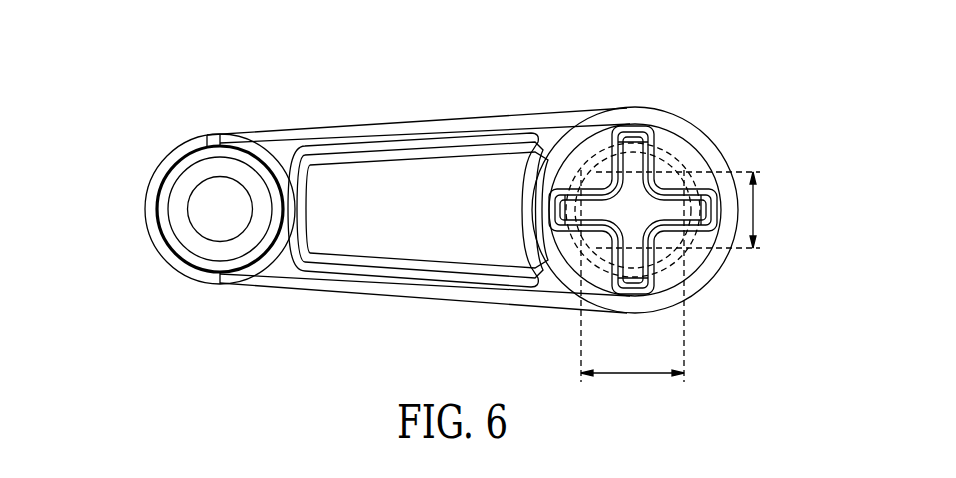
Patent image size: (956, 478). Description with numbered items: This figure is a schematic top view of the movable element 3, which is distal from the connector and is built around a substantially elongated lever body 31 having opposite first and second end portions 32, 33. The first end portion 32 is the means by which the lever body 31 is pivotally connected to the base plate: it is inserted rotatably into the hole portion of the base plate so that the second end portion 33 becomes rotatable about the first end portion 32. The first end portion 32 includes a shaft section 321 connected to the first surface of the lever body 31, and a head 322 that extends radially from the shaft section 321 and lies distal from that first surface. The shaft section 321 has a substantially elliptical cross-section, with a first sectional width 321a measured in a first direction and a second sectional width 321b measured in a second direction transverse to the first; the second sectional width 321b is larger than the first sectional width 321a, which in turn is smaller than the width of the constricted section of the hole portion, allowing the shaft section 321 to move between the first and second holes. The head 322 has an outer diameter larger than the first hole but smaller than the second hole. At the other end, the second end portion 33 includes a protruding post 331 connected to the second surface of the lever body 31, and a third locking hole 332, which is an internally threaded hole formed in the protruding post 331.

The movable element 3 is at (403, 100).
The lever body 31 is at (477, 119).
The first end portion 32 is at (672, 148).
The shaft section 321 is at (660, 152).
The first sectional width 321a is at (700, 210).
The second sectional width 321b is at (632, 276).
The head 322 is at (572, 118).
The second end portion 33 is at (205, 142).
The protruding post 331 is at (182, 184).
The third locking hole 332 is at (197, 212).